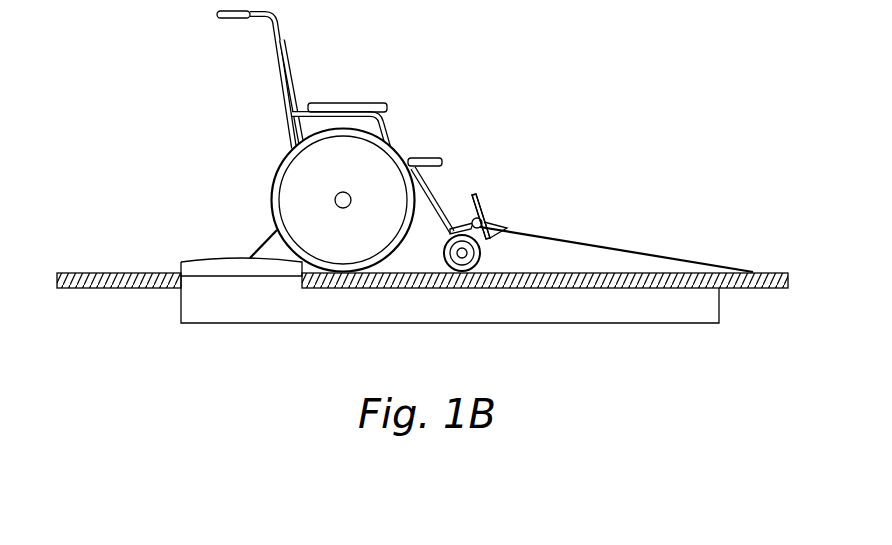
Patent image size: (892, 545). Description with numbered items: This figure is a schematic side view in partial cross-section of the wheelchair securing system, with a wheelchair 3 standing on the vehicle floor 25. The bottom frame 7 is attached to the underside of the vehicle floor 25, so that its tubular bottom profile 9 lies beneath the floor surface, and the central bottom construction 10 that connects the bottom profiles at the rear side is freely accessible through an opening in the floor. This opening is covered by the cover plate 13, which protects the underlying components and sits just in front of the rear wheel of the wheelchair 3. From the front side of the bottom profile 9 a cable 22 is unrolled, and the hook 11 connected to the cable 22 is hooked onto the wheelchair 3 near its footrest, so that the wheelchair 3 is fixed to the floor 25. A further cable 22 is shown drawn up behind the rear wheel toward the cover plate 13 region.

The wheelchair 3 is at (400, 70).
The bottom frame 7 is at (290, 342).
The bottom profile 9 is at (662, 310).
The central bottom construction 10 is at (197, 303).
The hook 11 is at (482, 217).
The cover plate 13 is at (217, 268).
The cable 22 is at (263, 243).
The vehicle floor 25 is at (772, 272).